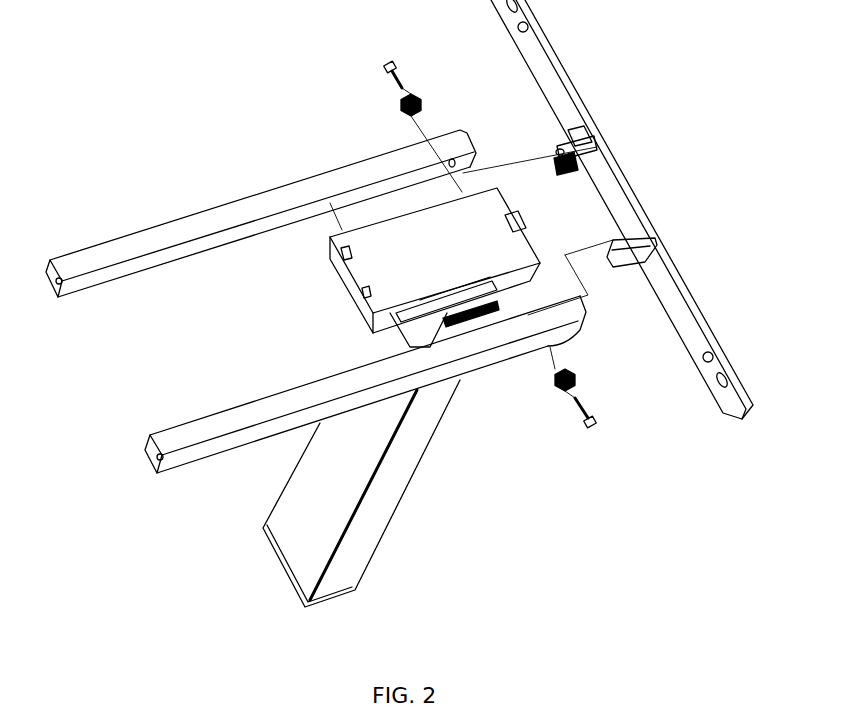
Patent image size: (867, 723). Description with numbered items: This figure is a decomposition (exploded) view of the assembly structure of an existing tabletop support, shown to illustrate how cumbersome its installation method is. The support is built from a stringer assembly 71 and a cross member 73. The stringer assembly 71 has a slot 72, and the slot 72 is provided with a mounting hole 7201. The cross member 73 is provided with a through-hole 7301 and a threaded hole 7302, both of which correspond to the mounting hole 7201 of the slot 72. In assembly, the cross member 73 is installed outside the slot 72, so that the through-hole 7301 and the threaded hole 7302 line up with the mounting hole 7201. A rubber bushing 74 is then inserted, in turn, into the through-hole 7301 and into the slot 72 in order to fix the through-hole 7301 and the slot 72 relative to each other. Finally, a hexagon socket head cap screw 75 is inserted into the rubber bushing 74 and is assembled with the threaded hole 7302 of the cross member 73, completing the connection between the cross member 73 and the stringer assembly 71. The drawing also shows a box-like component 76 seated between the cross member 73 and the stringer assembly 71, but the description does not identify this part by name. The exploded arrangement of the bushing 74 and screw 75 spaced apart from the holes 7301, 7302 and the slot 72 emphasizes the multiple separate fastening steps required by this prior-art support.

The stringer assembly 71 is at (562, 93).
The slot 72 is at (607, 138).
The mounting hole 7201 is at (558, 152).
The cross member 73 is at (213, 218).
The through-hole 7301 is at (560, 347).
The threaded hole 7302 is at (447, 168).
The rubber bushing 74 is at (423, 97).
The hexagon socket head cap screw 75 is at (397, 62).
The control box 76 is at (383, 273).